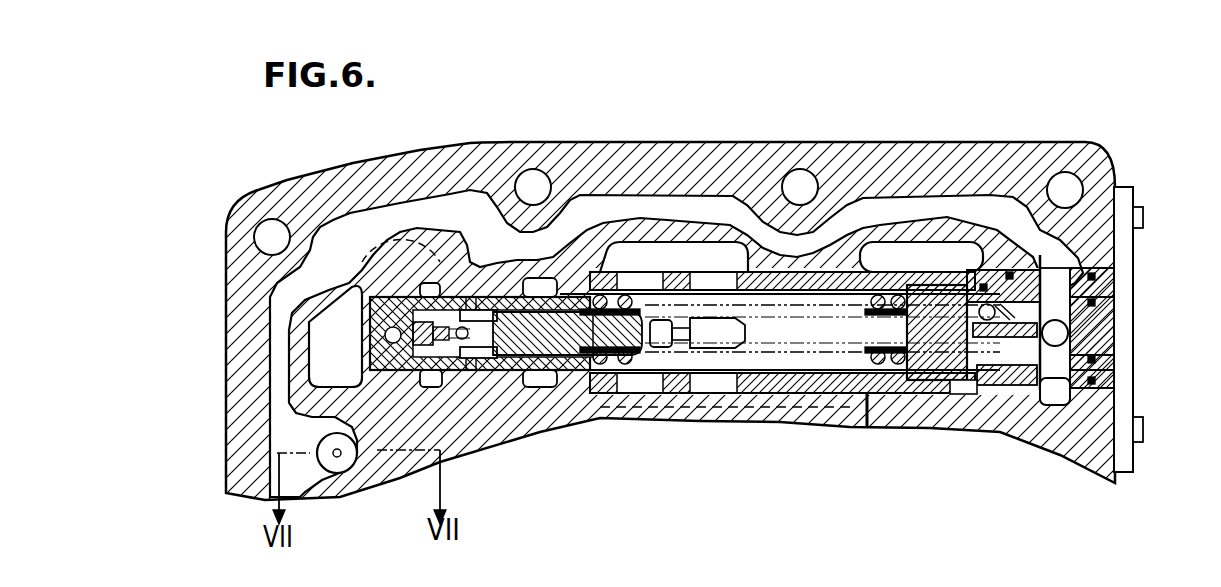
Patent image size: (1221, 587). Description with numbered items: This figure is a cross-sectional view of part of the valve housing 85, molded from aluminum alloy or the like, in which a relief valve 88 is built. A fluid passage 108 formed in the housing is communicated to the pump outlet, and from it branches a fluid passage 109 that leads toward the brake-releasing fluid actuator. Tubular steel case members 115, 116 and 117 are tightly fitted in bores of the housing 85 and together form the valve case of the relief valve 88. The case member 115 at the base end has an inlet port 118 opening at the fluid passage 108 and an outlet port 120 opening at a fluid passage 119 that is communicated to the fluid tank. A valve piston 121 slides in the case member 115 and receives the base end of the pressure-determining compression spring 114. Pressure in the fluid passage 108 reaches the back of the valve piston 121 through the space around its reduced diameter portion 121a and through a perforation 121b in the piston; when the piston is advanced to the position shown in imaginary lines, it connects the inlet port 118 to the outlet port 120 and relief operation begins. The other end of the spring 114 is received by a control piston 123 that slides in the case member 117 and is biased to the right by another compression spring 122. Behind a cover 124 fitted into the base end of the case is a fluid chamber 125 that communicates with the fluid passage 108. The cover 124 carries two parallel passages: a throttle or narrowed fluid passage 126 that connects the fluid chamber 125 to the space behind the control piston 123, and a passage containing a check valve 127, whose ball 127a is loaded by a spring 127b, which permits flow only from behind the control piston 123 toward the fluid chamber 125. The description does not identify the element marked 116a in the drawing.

The valve housing 85 is at (1095, 150).
The relief valve 88 is at (627, 263).
The fluid passage 108 is at (890, 188).
The fluid passage 109 is at (313, 473).
The pressure-determining compression spring 114 is at (660, 273).
The case member 115 is at (520, 372).
The case member 116 is at (715, 400).
The fluid chamber 116a is at (820, 272).
The case member 117 is at (920, 380).
The inlet port 118 is at (472, 297).
The fluid passage 119 is at (610, 385).
The outlet port 120 is at (610, 392).
The valve piston 121 is at (530, 277).
The reduced diameter portion 121a is at (553, 388).
The perforation 121b is at (473, 347).
The compression spring 122 is at (866, 428).
The control piston 123 is at (940, 352).
The cover 124 is at (1080, 377).
The fluid chamber 125 is at (1050, 322).
The throttle passage 126 is at (962, 392).
The check valve 127 is at (970, 270).
The ball 127a is at (1043, 268).
The spring 127b is at (1095, 262).